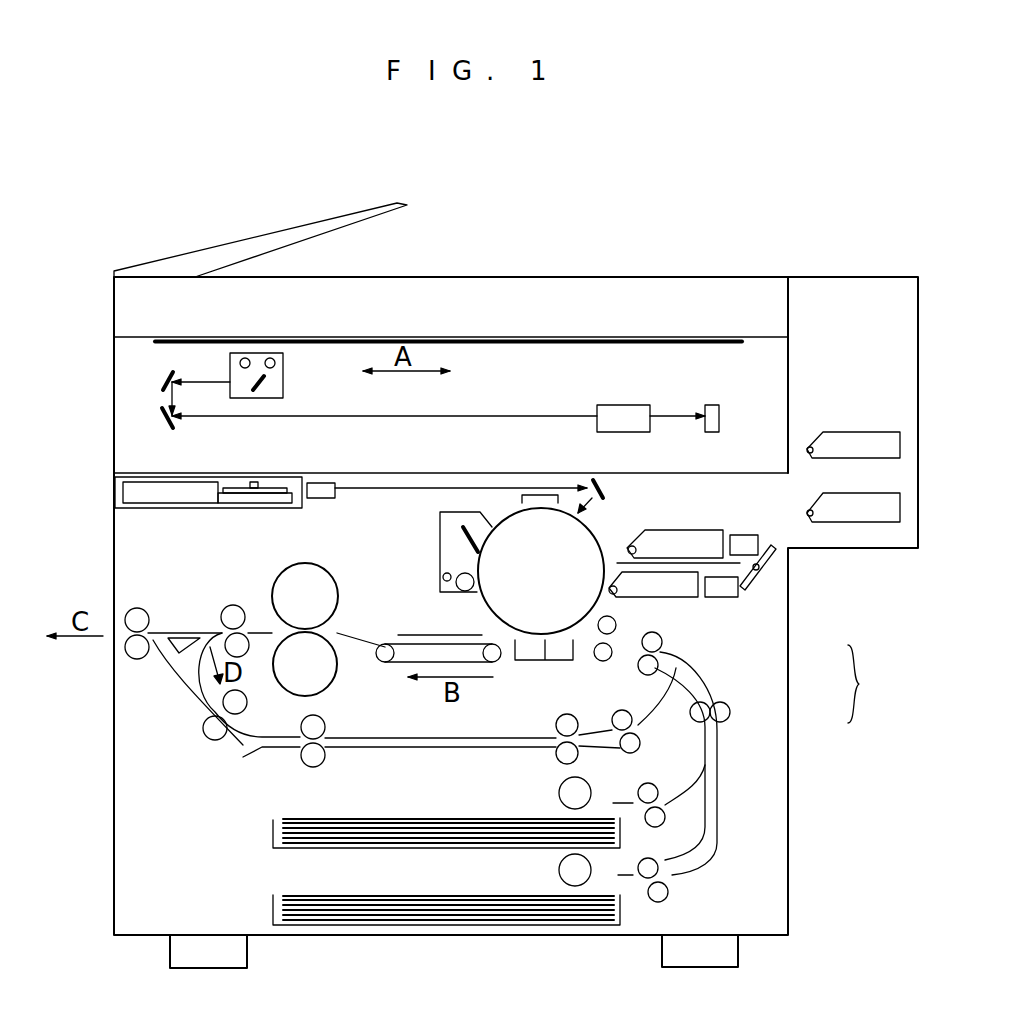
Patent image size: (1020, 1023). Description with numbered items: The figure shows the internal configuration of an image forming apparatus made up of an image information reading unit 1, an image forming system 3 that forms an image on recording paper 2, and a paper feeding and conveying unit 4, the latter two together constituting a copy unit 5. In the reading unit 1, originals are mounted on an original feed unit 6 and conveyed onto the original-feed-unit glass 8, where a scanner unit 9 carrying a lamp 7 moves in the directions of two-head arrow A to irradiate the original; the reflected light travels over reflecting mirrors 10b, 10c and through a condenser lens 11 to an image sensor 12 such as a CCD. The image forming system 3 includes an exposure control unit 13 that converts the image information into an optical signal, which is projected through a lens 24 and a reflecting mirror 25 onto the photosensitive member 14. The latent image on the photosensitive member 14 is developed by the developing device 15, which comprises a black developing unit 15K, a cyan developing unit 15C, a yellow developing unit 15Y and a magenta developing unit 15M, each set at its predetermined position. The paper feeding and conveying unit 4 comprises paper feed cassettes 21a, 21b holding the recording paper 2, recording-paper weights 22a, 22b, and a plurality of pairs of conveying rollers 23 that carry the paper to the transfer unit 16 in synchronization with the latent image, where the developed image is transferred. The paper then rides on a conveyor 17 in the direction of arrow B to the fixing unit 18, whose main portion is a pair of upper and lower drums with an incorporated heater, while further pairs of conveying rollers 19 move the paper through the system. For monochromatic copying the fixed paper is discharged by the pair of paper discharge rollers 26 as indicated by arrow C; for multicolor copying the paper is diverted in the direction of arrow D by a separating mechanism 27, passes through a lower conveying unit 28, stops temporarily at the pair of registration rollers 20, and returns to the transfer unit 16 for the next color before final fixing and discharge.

The image information reading unit 1 is at (473, 377).
The recording paper 2 is at (412, 635).
The image forming system 3 is at (674, 625).
The paper feeding and conveying unit 4 is at (750, 796).
The copy unit 5 is at (866, 684).
The original feed unit 6 is at (238, 238).
The lamp 7 is at (259, 374).
The original-feed-unit glass 8 is at (696, 337).
The scanner unit 9 is at (283, 373).
The reflecting mirror 10b is at (165, 379).
The reflecting mirror 10c is at (163, 415).
The condenser lens 11 is at (630, 405).
The image sensor 12 is at (722, 415).
The exposure control unit 13 is at (228, 478).
The photosensitive member 14 is at (512, 525).
The developing device 15 is at (840, 416).
The cyan developing unit 15C is at (665, 538).
The magenta developing unit 15M is at (835, 450).
The yellow developing unit 15Y is at (816, 496).
The black developing unit 15K is at (682, 598).
The transfer unit 16 is at (560, 660).
The conveyor 17 is at (385, 645).
The fixing unit 18 is at (320, 577).
The conveying rollers 19 is at (250, 638).
The registration rollers 20 is at (598, 622).
The paper feed cassette 21a is at (623, 847).
The paper feed cassette 21b is at (623, 921).
The recording-paper weight 22a is at (559, 794).
The recording-paper weight 22b is at (559, 869).
The conveying rollers 23 is at (703, 722).
The lens 24 is at (330, 481).
The reflecting mirror 25 is at (598, 478).
The paper discharge rollers 26 is at (137, 608).
The separating mechanism 27 is at (185, 636).
The lower conveying unit 28 is at (398, 749).